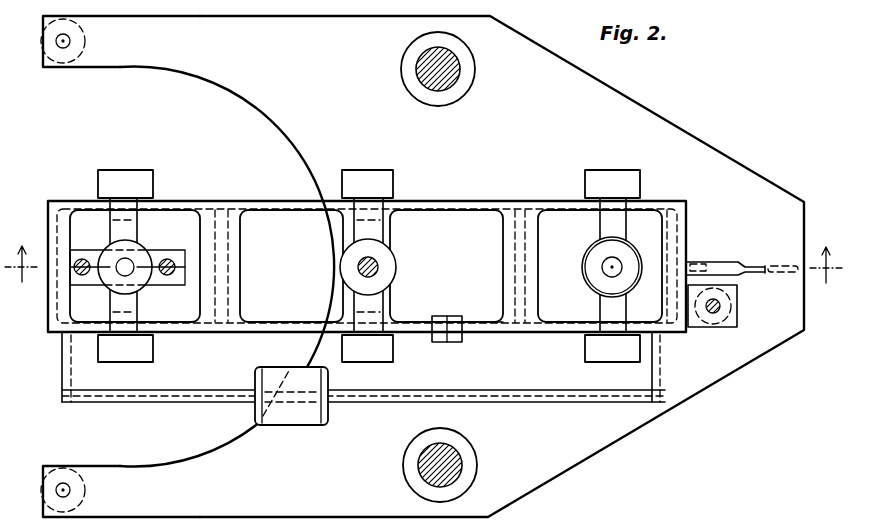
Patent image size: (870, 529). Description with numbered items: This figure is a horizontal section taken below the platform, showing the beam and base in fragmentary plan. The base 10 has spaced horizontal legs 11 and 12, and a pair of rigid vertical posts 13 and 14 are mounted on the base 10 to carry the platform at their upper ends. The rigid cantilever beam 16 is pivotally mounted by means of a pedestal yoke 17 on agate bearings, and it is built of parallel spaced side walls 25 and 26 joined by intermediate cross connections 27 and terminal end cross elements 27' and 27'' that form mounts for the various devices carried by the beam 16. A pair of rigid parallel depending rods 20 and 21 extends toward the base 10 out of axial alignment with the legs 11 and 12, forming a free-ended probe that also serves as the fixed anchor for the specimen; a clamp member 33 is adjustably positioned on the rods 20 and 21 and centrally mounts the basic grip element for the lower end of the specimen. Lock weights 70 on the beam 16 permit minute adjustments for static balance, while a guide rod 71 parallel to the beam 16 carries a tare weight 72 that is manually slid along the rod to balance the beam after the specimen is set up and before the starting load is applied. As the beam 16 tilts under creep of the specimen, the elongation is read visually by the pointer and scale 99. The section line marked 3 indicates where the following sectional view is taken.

The base 10 is at (598, 445).
The horizontal leg 11 is at (123, 69).
The horizontal leg 12 is at (118, 467).
The vertical post 13 is at (458, 80).
The vertical post 14 is at (458, 468).
The beam 16 is at (496, 206).
The pedestal yoke 17 is at (384, 272).
The depending rod 20 is at (84, 277).
The depending rod 21 is at (168, 277).
The side wall 25 is at (407, 205).
The side wall 26 is at (535, 333).
The cross connection 27 is at (371, 266).
The terminal end cross element 27' is at (133, 250).
The terminal end cross element 27'' is at (635, 266).
The clamp member 33 is at (165, 253).
The lock weight 70 is at (451, 310).
The guide rod 71 is at (478, 394).
The weight 72 is at (287, 426).
The pointer and scale 99 is at (767, 275).
The section line 3- 3 is at (423, 276).